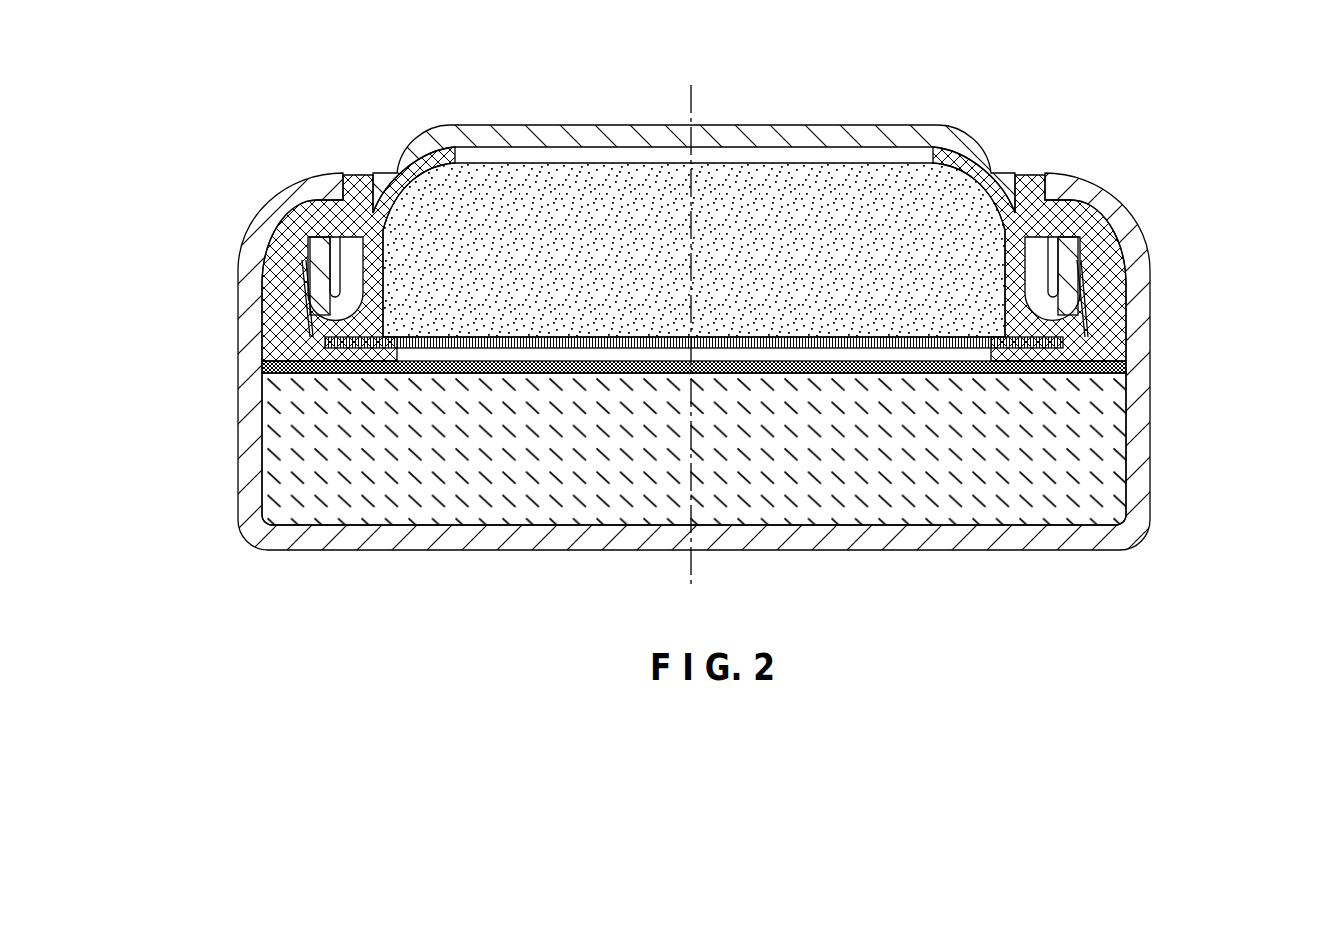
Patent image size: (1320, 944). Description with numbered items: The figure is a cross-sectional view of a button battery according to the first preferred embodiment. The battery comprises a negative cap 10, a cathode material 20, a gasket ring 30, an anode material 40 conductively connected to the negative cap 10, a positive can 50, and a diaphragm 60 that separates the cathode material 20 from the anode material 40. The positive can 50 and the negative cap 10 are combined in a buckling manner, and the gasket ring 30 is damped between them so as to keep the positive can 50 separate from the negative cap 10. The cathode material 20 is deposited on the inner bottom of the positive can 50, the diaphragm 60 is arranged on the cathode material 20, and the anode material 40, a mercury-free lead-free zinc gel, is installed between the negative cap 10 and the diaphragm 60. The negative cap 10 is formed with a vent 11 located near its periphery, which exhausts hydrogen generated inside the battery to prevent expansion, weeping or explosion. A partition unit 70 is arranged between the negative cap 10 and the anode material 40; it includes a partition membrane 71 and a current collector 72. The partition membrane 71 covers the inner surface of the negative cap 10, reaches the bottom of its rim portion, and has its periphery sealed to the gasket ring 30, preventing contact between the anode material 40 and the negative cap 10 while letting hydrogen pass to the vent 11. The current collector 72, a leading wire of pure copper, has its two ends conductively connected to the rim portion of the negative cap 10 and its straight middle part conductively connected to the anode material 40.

The negative cap 10 is at (352, 192).
The vent 11 is at (1007, 200).
The cathode material 20 is at (1102, 415).
The gasket ring 30 is at (1125, 327).
The anode material 40 is at (417, 253).
The positive can 50 is at (1133, 461).
The diaphragm 60 is at (1127, 361).
The partition unit 70 is at (770, 243).
The partition membrane 71 is at (1093, 211).
The current collector 72 is at (1082, 291).